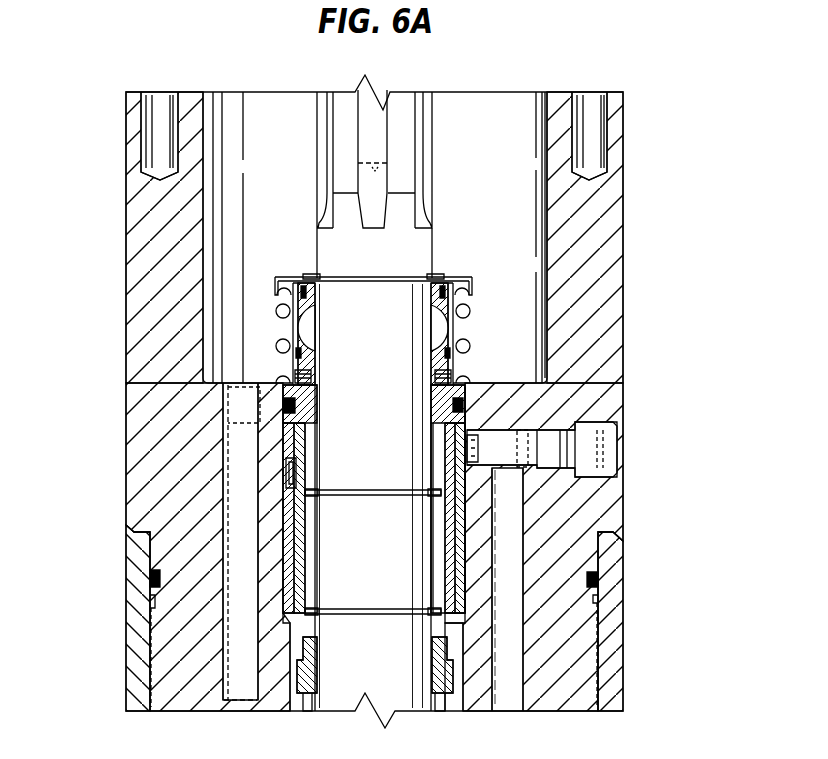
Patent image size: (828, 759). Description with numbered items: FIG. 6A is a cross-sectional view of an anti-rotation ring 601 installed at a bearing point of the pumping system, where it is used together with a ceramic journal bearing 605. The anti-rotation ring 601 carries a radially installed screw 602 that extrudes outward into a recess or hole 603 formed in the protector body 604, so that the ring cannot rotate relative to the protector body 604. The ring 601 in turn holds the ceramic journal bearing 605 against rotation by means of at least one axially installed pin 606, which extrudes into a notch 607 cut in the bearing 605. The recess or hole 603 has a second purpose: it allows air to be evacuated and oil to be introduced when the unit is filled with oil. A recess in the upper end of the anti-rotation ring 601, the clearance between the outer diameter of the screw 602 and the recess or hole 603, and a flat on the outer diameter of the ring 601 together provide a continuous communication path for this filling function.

The anti-rotation ring 601 is at (285, 442).
The radially installed screw 602 is at (467, 430).
The recess or hole 603 is at (522, 458).
The protector body 604 is at (623, 278).
The ceramic journal bearing 605 is at (467, 532).
The axially installed pin 606 is at (285, 467).
The notch 607 is at (300, 482).